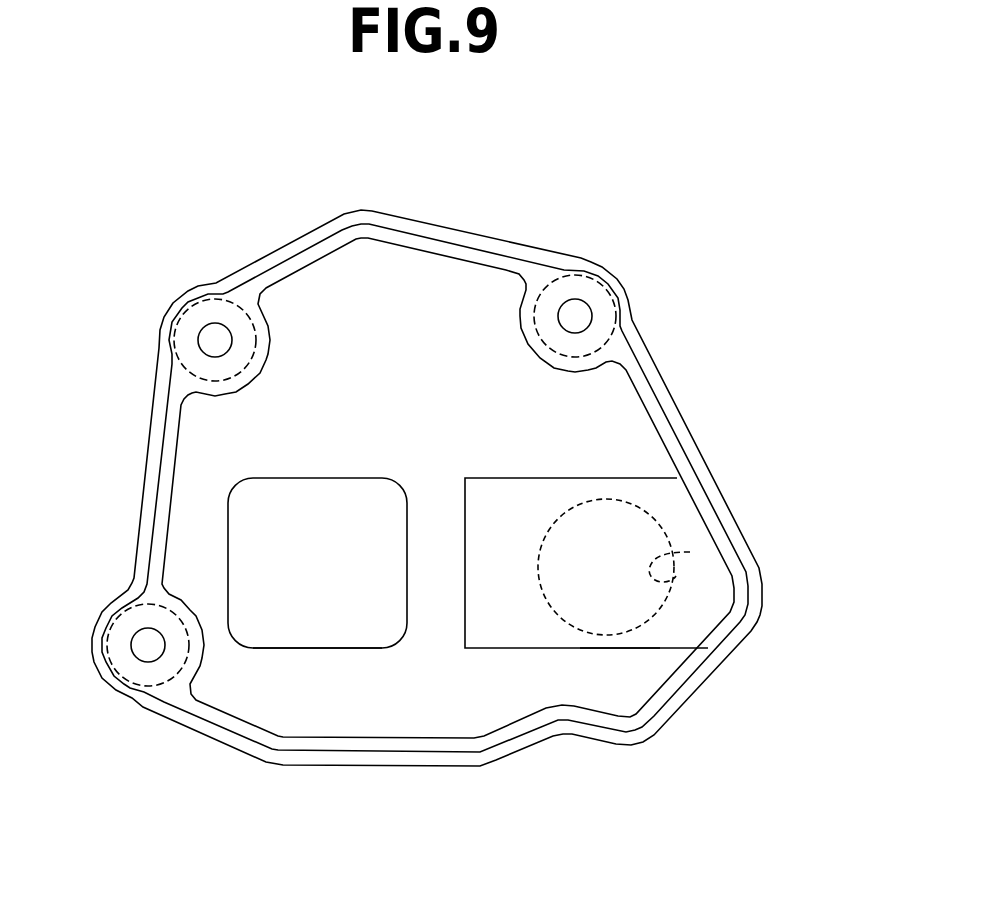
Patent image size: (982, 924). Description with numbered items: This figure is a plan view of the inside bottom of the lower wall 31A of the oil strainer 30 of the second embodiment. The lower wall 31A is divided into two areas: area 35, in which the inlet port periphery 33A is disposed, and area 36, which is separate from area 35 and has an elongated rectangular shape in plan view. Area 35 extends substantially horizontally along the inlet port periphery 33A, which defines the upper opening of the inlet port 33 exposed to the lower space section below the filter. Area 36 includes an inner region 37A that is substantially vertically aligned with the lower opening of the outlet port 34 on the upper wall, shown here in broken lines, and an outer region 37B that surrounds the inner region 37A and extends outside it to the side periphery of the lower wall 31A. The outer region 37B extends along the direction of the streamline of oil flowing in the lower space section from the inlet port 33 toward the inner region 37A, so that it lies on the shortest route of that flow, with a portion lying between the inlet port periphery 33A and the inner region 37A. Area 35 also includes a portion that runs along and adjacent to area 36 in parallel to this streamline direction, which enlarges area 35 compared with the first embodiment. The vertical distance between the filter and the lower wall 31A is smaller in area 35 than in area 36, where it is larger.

The oil strainer 30 is at (665, 345).
The lower wall 31A is at (687, 450).
The inlet port 33 is at (277, 518).
The inlet port periphery 33A is at (328, 648).
The outlet port 34 is at (690, 552).
The area 35 is at (425, 695).
The area 36 is at (613, 650).
The inner region 37A is at (637, 542).
The outer region 37B is at (507, 613).